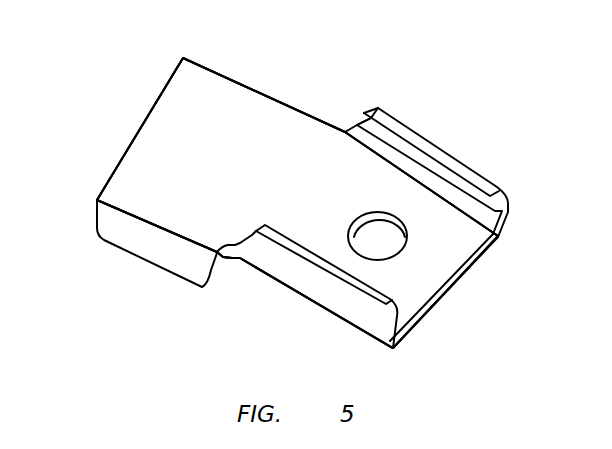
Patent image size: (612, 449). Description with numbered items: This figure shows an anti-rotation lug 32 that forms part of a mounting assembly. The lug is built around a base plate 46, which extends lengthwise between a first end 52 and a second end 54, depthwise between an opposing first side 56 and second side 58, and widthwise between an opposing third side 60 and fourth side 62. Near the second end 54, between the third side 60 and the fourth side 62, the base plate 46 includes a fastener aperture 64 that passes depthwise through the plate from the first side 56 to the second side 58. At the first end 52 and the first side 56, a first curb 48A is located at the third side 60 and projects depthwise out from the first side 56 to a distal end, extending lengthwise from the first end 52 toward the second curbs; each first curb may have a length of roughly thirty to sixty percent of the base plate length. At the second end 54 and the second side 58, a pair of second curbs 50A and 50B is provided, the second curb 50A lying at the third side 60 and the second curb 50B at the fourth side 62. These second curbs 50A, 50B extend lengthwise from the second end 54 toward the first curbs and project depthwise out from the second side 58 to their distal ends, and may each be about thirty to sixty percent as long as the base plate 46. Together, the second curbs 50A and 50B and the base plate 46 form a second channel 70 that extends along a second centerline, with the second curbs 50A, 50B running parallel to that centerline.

The anti-rotation lug 32 is at (475, 118).
The base plate 46 is at (303, 136).
The first curb 48A is at (160, 260).
The second curb 50A is at (350, 302).
The second curb 50B is at (492, 179).
The first end 52 is at (140, 127).
The second end 54 is at (458, 282).
The first side 56 is at (227, 263).
The second side 58 is at (243, 124).
The third side 60 is at (132, 217).
The fourth side 62 is at (217, 73).
The fastener aperture 64 is at (407, 237).
The second channel 70 is at (406, 281).